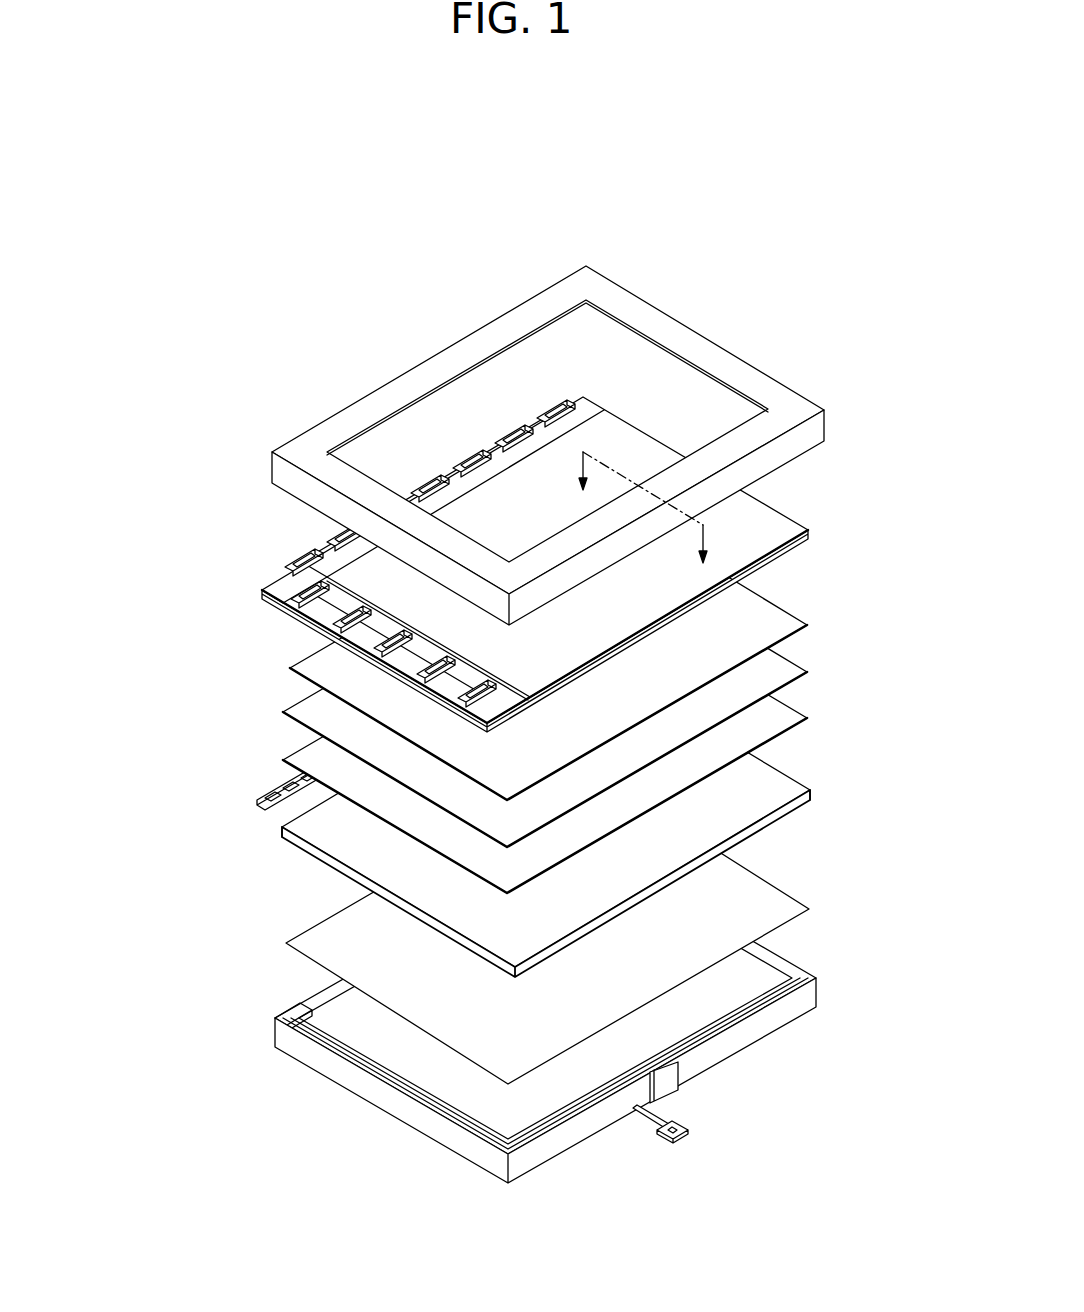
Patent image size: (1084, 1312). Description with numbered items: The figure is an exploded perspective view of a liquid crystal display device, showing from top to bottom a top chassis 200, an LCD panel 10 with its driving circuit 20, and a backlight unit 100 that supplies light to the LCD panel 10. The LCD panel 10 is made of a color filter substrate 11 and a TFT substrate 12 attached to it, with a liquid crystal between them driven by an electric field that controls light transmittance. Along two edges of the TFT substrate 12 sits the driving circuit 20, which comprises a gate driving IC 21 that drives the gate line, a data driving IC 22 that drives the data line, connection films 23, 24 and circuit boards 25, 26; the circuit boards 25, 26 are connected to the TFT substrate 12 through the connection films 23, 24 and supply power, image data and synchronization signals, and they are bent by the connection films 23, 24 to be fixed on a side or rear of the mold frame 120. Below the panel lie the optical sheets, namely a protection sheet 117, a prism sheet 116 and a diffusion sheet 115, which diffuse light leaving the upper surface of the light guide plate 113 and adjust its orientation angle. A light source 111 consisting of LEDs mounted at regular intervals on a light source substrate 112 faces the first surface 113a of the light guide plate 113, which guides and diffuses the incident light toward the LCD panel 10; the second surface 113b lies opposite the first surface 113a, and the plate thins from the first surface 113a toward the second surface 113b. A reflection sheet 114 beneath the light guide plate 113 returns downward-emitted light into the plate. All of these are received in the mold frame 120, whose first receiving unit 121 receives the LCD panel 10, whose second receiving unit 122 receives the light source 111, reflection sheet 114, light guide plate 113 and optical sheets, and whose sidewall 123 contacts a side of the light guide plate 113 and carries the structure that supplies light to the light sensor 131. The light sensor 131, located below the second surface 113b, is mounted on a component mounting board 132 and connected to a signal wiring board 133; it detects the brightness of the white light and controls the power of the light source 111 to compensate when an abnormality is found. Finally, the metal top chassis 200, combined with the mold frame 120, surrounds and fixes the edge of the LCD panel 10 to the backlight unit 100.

The backlight unit 100 is at (138, 878).
The top chassis 200 is at (826, 426).
The LCD panel 10 is at (893, 499).
The color filter substrate 11 is at (787, 518).
The TFT substrate 12 is at (803, 550).
The driving circuit 20 is at (162, 450).
The gate driving IC 21 is at (300, 594).
The data driving IC 22 is at (300, 552).
The connection film 23 is at (300, 613).
The connection film 24 is at (290, 566).
The circuit board 25 is at (335, 582).
The circuit board 26 is at (280, 585).
The light source 111 is at (262, 800).
The light source substrate 112 is at (268, 806).
The light guide plate 113 is at (537, 813).
The first surface 113a is at (282, 833).
The second surface 113b is at (810, 790).
The reflection sheet 114 is at (286, 943).
The diffusion sheet 115 is at (283, 760).
The prism sheet 116 is at (283, 712).
The protection sheet 117 is at (290, 668).
The mold frame 120 is at (203, 1013).
The first receiving unit 121 is at (298, 1017).
The second receiving unit 122 is at (308, 1052).
The sidewall 123 is at (303, 1033).
The light sensor 131 is at (690, 1126).
The component mounting board 132 is at (673, 1140).
The signal wiring board 133 is at (645, 1115).